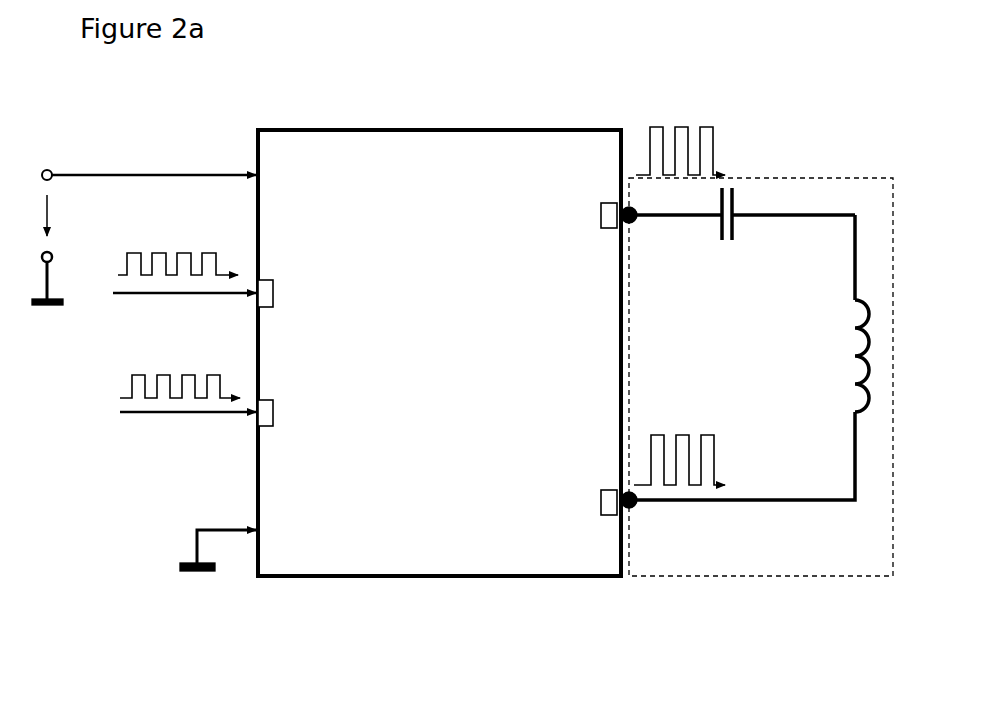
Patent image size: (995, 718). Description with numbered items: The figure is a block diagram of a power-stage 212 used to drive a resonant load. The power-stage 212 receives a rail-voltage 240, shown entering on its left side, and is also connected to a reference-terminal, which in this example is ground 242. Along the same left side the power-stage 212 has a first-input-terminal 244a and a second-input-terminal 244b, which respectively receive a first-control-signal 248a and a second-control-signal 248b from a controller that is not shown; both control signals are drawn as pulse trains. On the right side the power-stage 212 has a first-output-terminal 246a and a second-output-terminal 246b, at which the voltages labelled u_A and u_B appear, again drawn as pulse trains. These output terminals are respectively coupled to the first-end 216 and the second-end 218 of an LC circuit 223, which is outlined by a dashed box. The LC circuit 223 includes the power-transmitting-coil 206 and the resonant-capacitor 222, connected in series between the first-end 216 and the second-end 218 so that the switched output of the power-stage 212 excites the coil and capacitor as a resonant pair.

The power-stage 212 is at (460, 128).
The rail-voltage U_DC 240 is at (50, 168).
The ground 242 is at (184, 565).
The first-input-terminal 244a is at (275, 292).
The second-input-terminal 244b is at (275, 412).
The first-output-terminal u_A 246a is at (599, 215).
The second-output-terminal u_B 246b is at (599, 503).
The first-control-signal A 248a is at (116, 268).
The second-control-signal B 248b is at (120, 389).
The first-end of the LC circuit 216 is at (630, 220).
The second-end of the LC circuit 218 is at (633, 505).
The resonant-capacitor Ct 222 is at (735, 200).
The power-transmitting-coil 206 is at (862, 302).
The LC circuit 223 is at (760, 577).